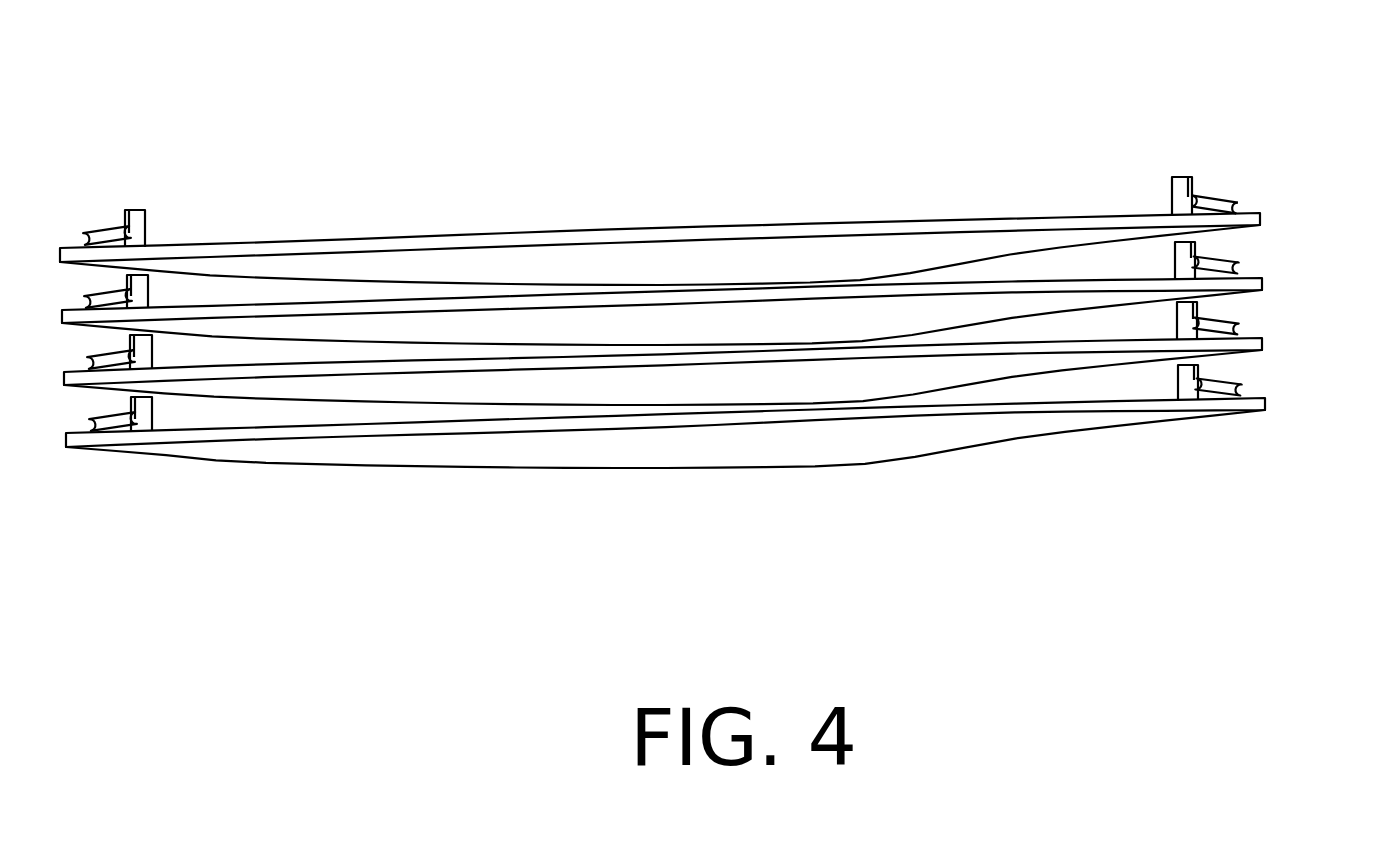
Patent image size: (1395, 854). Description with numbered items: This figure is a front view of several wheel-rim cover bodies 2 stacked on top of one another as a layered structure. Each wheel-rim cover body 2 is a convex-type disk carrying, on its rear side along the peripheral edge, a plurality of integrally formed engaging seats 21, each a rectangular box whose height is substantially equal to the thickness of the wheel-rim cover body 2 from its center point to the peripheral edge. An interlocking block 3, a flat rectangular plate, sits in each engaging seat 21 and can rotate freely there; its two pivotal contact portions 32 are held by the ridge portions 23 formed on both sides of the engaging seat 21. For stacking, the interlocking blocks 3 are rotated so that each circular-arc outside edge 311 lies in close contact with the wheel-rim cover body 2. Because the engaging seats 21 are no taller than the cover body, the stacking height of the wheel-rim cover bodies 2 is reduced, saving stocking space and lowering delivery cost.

The wheel-rim cover body 2 is at (647, 231).
The engaging seat 21 is at (1172, 185).
The ridge portion 23 is at (1192, 177).
The interlocking block 3 is at (728, 267).
The pivotal contact portion 32 is at (1212, 202).
The outside edge 311 is at (1237, 202).